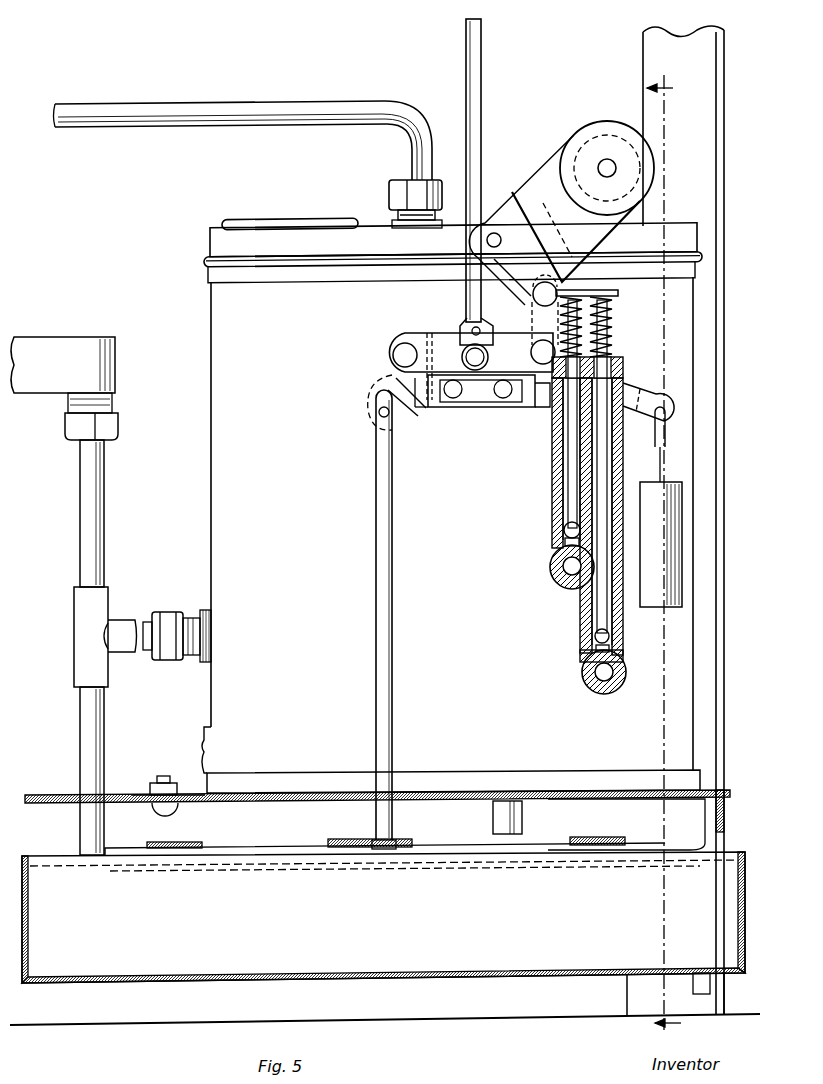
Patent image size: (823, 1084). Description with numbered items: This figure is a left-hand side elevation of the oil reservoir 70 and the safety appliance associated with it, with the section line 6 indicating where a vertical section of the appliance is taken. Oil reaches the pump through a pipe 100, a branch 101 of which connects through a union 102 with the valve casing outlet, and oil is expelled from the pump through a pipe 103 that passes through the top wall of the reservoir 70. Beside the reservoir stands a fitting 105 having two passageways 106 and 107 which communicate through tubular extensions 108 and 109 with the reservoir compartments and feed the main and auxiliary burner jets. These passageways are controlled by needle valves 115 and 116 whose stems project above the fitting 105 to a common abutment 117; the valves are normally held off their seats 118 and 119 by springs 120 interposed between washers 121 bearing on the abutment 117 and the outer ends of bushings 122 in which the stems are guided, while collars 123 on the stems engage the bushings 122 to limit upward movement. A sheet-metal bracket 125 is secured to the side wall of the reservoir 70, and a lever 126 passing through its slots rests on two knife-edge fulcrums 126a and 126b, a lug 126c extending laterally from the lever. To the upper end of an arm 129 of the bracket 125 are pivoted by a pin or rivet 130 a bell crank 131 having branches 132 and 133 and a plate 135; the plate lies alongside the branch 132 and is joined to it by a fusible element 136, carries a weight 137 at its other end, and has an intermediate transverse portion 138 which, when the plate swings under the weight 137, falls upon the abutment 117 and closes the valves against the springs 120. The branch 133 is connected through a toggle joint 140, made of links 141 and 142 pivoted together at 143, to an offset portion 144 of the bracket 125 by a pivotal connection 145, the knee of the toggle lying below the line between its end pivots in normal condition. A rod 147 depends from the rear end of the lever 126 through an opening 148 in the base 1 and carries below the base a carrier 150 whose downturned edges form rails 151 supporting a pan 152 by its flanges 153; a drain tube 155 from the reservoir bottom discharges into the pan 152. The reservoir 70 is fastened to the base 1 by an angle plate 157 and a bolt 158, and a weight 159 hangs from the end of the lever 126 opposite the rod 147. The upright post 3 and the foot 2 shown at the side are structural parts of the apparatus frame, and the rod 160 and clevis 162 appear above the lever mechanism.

The base 1 is at (52, 797).
The base foot 2 is at (638, 993).
The upright post 3 is at (708, 133).
The section line 6— 6 is at (664, 549).
The oil reservoir 70 is at (211, 478).
The pipe 100 is at (85, 714).
The branch 101 is at (150, 660).
The union 102 is at (168, 615).
The pipe 103 is at (264, 115).
The fitting 105 is at (552, 492).
The passageway 106 is at (613, 673).
The passageway 107 is at (558, 583).
The tubular extension 108 is at (612, 638).
The tubular extension 109 is at (562, 527).
The needle valve 115 is at (596, 640).
The needle valve 116 is at (561, 542).
The common abutment 117 is at (591, 291).
The valve seat 118 is at (612, 650).
The valve seat 119 is at (556, 565).
The springs 120 is at (613, 329).
The washers 121 is at (614, 302).
The bushings 122 is at (622, 367).
The collars 123 is at (600, 396).
The bracket 125 is at (442, 338).
The lever 126 is at (386, 398).
The fulcrum 126a is at (440, 409).
The fulcrum 126b is at (537, 407).
The lug 126c is at (491, 410).
The arm 129 is at (533, 322).
The pin or rivet 130 is at (538, 288).
The bell crank 131 is at (527, 293).
The branch 132 is at (506, 252).
The branch 133 is at (532, 341).
The plate 135 is at (500, 215).
The fusible element 136 is at (502, 240).
The weight 137 is at (601, 128).
The transverse portion 138 is at (527, 221).
The toggle joint 140 is at (481, 391).
The link 141 is at (445, 359).
The link 142 is at (512, 359).
The pivot 143 is at (478, 357).
The offset portion 144 is at (411, 335).
The pivotal connection 145 is at (396, 355).
The rod 147 is at (386, 629).
The opening 148 is at (402, 790).
The carrier 150 is at (272, 848).
The supporting rails 151 is at (246, 872).
The pan 152 is at (383, 917).
The flanges 153 is at (50, 870).
The drain tube 155 is at (497, 819).
The angle plate 157 is at (198, 790).
The bolt 158 is at (162, 782).
The weight 159 is at (643, 482).
The vertical rod 160 is at (481, 114).
The clevis 162 is at (470, 326).